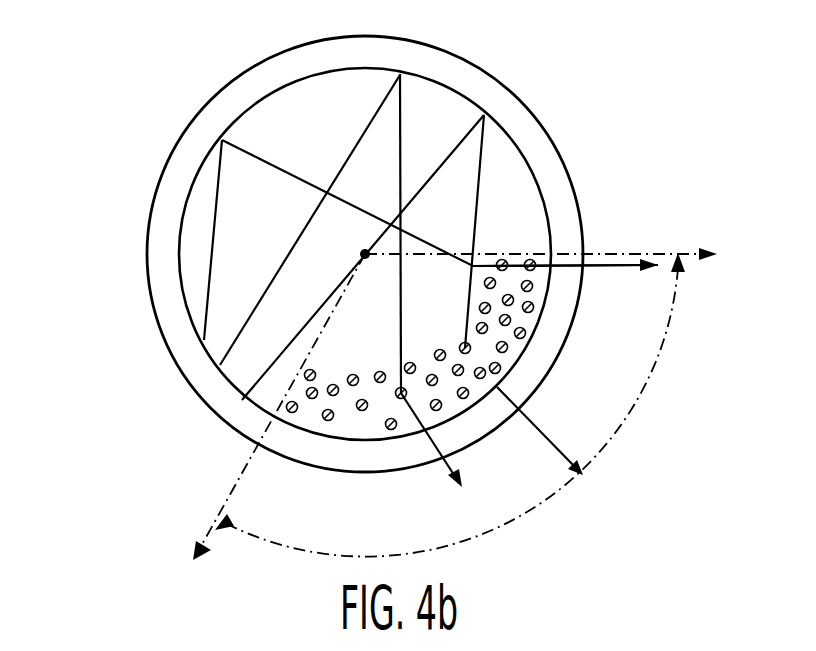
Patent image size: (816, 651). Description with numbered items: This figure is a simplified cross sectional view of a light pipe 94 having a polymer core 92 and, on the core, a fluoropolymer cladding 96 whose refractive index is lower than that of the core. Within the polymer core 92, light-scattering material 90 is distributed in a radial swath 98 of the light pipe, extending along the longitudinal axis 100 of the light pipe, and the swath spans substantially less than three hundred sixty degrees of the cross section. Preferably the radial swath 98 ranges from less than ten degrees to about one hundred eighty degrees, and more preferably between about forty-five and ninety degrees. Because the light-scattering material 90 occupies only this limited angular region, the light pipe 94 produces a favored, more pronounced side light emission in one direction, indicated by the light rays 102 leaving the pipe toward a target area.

The light-scattering material 90 is at (386, 425).
The polymer core 92 is at (240, 202).
The light pipe 94 is at (545, 88).
The fluoropolymer cladding 96 is at (560, 173).
The radial swath 98 is at (665, 340).
The longitudinal axis 100 is at (364, 250).
The light rays 102 is at (448, 465).